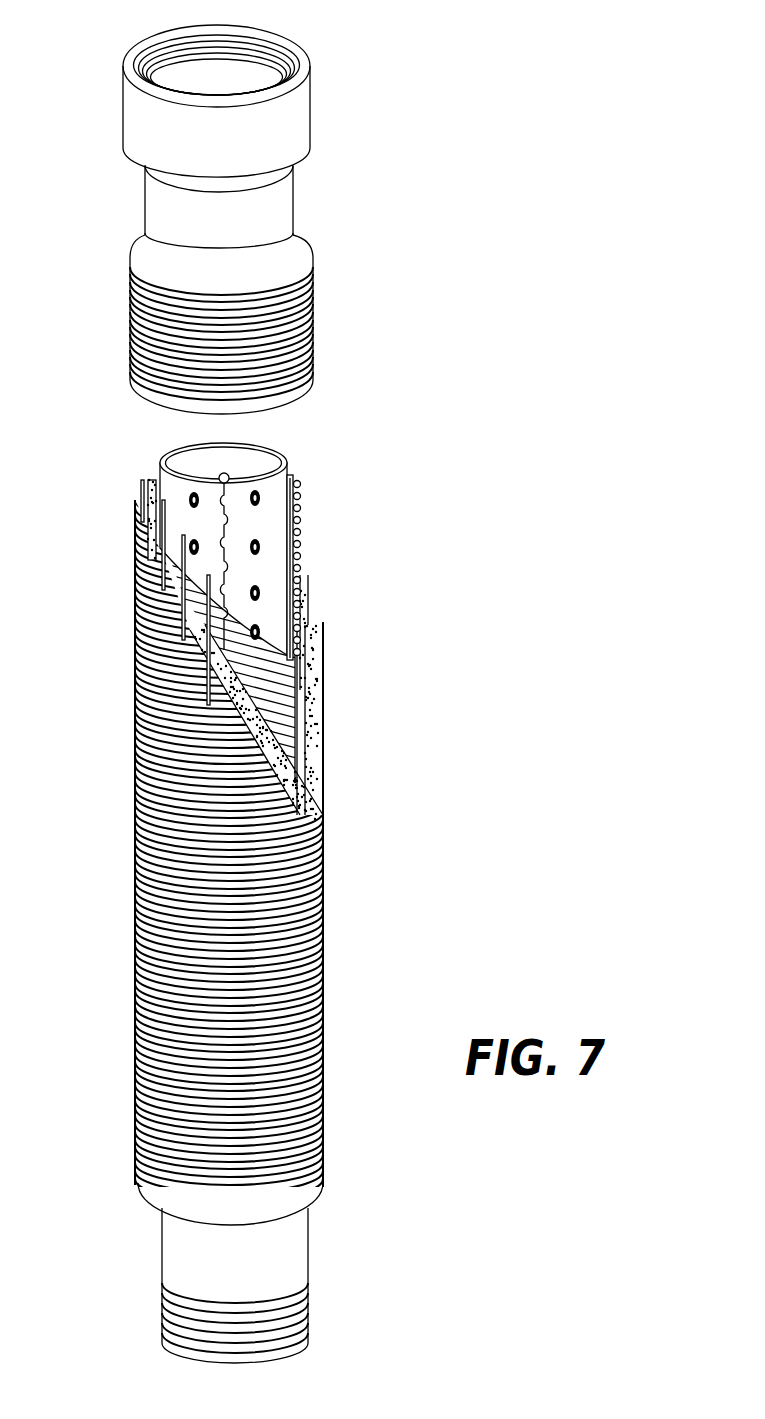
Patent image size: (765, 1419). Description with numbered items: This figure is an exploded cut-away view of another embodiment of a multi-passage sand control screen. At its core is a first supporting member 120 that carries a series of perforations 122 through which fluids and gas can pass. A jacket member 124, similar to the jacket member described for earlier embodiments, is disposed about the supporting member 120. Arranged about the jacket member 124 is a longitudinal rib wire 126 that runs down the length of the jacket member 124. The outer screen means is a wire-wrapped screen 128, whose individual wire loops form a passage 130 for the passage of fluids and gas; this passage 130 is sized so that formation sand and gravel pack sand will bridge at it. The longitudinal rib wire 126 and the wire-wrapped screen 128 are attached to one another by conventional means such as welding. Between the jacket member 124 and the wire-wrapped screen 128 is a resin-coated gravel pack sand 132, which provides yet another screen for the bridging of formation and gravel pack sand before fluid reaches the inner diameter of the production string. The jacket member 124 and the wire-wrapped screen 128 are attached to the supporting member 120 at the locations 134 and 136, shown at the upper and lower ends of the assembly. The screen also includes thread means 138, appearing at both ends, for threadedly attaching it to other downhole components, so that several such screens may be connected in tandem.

The first supporting member 120 is at (160, 470).
The perforations 122 is at (258, 492).
The jacket member 124 is at (300, 548).
The longitudinal rib wire 126 is at (138, 490).
The wire-wrapped screen 128 is at (322, 890).
The passage 130 is at (305, 928).
The resin-coated gravel pack sand 132 is at (305, 604).
The attachment location 134 is at (300, 228).
The attachment location 136 is at (315, 1198).
The thread means 138 is at (277, 52).